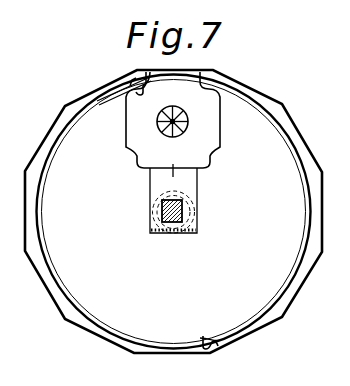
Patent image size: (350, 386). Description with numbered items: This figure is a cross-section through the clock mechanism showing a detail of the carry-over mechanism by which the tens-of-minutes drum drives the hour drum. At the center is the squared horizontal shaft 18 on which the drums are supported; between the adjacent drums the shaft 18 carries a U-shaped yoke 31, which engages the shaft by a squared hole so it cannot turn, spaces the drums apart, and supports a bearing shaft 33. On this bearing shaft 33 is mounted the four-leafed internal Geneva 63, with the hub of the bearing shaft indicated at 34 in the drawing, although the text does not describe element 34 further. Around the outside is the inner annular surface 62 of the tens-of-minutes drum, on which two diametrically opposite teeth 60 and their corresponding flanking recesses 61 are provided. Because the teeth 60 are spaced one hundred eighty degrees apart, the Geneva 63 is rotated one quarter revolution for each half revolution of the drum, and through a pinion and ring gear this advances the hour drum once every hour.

The squared horizontal shaft 18 is at (165, 211).
The U-shaped yoke 31 is at (181, 233).
The bearing shaft 33 is at (158, 117).
The hub pivot 34 is at (171, 126).
The teeth 60 is at (124, 97).
The flanking recesses 61 is at (147, 80).
The inner annular surface 62 is at (309, 206).
The four-leafed internal Geneva 63 is at (222, 134).